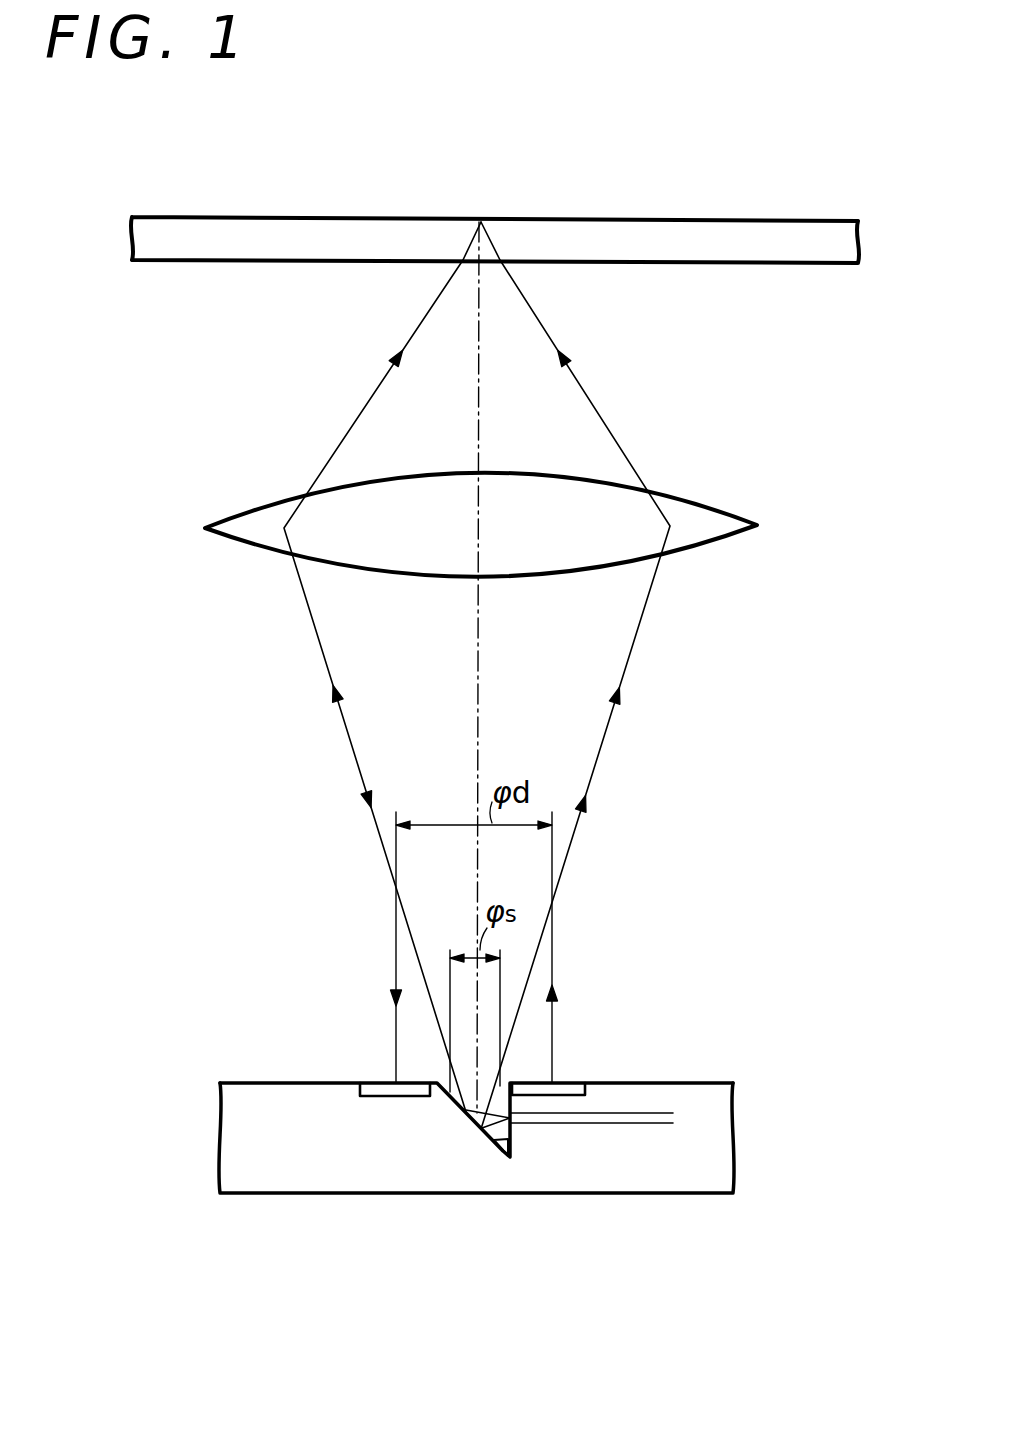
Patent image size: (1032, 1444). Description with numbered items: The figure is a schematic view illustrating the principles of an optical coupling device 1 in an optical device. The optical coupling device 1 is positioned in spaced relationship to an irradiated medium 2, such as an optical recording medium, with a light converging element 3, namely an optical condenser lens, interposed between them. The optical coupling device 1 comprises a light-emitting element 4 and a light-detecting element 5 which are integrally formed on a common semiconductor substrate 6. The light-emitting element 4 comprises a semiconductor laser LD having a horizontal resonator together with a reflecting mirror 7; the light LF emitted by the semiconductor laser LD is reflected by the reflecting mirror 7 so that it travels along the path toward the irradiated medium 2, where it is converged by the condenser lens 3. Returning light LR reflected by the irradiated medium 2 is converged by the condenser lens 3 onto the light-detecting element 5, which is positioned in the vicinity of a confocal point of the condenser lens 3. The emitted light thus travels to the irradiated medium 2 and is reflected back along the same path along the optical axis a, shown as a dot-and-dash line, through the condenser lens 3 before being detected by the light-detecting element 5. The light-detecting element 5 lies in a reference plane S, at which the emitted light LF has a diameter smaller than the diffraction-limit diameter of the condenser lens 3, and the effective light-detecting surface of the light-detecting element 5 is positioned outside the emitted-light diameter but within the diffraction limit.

The optical coupling device 1 is at (258, 1078).
The irradiated medium 2 is at (781, 245).
The light converging element 3 is at (712, 503).
The light-emitting element 4 is at (566, 1217).
The light-detecting element 5 is at (380, 1083).
The common semiconductor substrate 6 is at (476, 1153).
The reflecting mirror 7 is at (491, 1203).
The reference plane S is at (665, 1083).
The semiconductor laser LD is at (615, 1123).
The emitted light LF is at (412, 947).
The returning light LR is at (549, 942).
The optical axis a is at (477, 670).